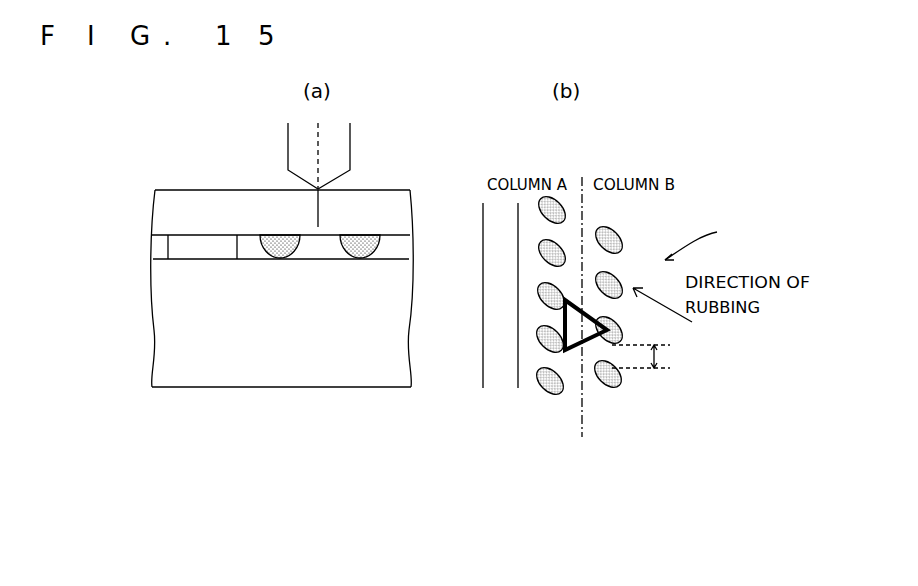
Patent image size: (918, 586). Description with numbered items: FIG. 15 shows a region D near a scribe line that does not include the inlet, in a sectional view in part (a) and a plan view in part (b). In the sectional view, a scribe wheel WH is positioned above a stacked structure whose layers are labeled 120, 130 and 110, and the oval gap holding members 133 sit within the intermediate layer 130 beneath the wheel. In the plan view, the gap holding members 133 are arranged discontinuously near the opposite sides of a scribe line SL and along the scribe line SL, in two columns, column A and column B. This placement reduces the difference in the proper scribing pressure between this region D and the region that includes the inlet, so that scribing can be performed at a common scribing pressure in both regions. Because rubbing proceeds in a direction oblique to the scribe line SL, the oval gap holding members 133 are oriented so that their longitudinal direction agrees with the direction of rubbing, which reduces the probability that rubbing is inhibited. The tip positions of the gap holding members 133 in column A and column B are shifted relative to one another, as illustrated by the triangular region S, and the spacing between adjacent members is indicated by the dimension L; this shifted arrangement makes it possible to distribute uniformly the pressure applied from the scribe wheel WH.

The substrate 110 is at (167, 318).
The upper layer 120 is at (167, 220).
The alignment layer / rubbing target region 130 is at (213, 248).
The gap holding member 133 is at (362, 257).
The scribe wheel WH is at (300, 146).
The triangular region S is at (560, 320).
The scribe line SL is at (581, 295).
The pitch length L is at (643, 358).
The region near a scribe line not including the inlet D is at (707, 241).